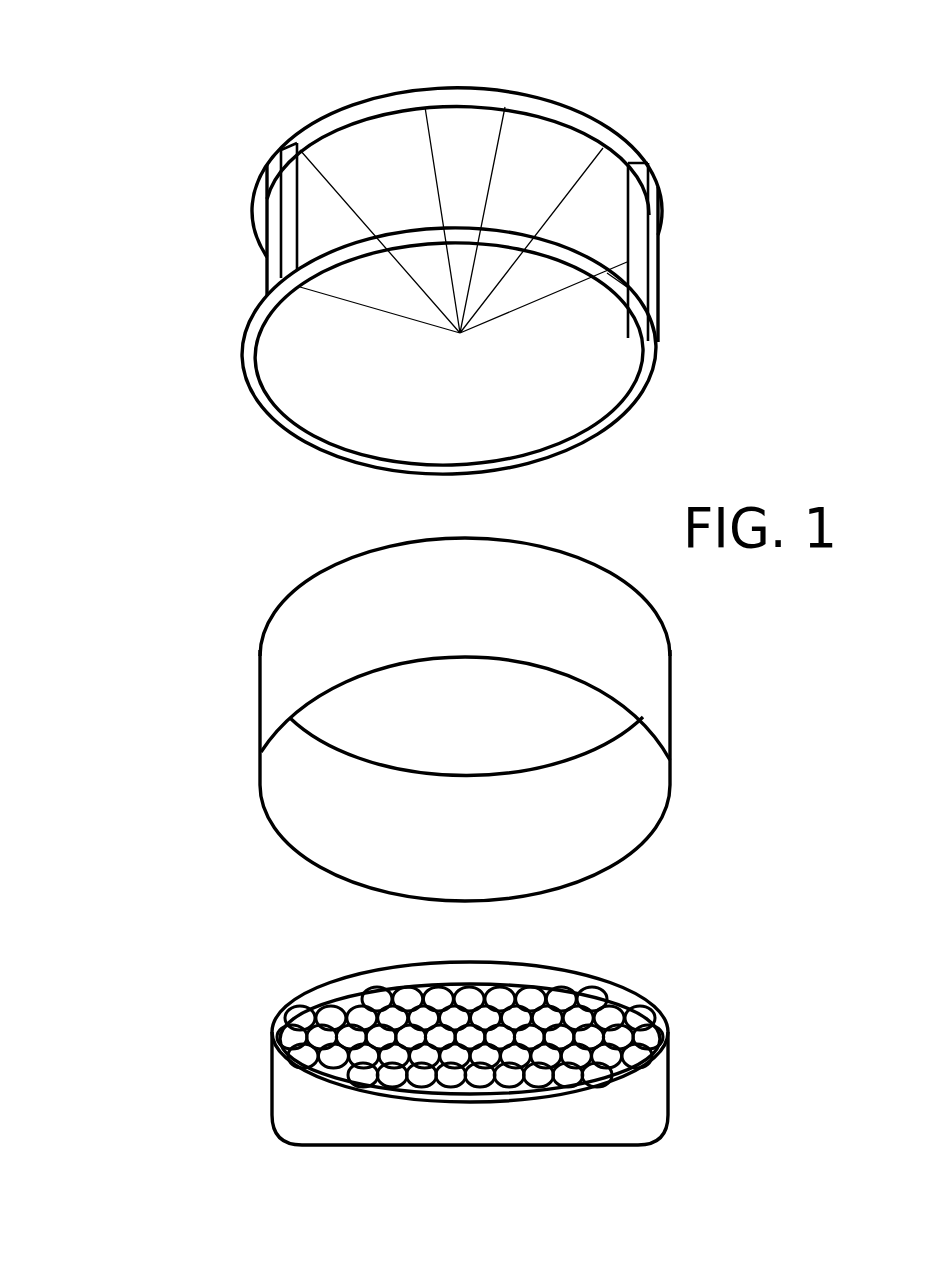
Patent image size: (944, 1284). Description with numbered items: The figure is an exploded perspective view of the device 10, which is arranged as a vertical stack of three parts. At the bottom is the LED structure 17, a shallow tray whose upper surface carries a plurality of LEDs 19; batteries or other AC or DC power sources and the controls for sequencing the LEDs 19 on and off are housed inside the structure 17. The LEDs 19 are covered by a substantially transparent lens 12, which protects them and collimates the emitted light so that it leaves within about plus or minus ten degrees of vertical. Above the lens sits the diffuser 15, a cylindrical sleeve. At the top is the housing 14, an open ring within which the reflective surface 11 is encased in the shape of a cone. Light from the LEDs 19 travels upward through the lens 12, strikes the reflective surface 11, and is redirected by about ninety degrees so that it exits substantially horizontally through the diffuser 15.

The device 10 is at (186, 121).
The reflective surface 11 is at (393, 170).
The housing 14 is at (263, 293).
The diffuser 15 is at (313, 665).
The lens 12 is at (645, 990).
The LED structure 17 is at (310, 1112).
The LEDs 19 is at (330, 1010).